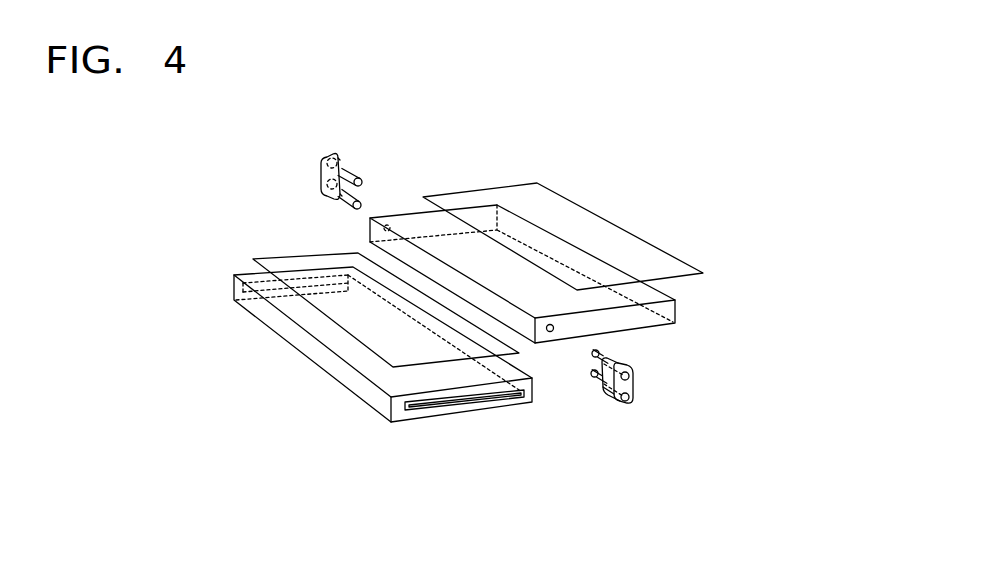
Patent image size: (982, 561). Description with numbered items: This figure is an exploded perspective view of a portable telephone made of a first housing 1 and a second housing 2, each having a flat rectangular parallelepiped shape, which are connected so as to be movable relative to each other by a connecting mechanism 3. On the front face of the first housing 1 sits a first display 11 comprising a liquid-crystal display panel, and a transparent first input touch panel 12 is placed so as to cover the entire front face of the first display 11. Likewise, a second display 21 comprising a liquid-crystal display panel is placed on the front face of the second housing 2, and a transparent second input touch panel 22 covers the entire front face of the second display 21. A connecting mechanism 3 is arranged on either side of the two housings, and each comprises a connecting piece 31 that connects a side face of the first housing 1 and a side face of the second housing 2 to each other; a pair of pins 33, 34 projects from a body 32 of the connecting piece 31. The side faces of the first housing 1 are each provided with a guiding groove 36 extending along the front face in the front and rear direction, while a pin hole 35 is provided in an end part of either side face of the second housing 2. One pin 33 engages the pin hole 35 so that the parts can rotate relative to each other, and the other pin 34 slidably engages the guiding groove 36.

The first housing 1 is at (382, 327).
The first display 11 is at (311, 325).
The first input touch panel 12 is at (298, 258).
The guiding groove 36 is at (451, 400).
The second housing 2 is at (552, 284).
The second display 21 is at (655, 293).
The second input touch panel 22 is at (590, 223).
The pin hole 35 is at (552, 332).
The connecting mechanism 3 is at (481, 306).
The connecting piece 31 is at (323, 174).
The body 32 is at (618, 403).
The pin 33 is at (603, 352).
The pin 34 is at (593, 378).